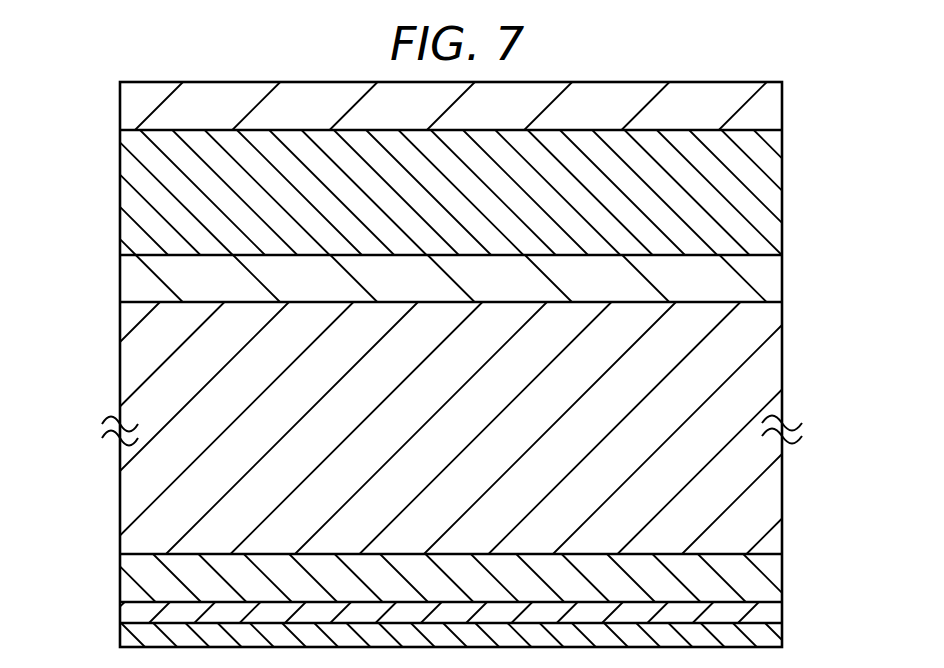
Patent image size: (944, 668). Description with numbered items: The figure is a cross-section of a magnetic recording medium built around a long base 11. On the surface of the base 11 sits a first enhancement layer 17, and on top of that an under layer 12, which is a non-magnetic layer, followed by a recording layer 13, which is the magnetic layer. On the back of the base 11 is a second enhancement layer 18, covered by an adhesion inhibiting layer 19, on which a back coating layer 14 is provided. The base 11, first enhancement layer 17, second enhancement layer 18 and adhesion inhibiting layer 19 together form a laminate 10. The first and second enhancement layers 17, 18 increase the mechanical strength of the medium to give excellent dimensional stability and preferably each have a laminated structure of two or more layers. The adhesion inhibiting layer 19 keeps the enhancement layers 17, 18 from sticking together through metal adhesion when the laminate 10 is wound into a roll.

The laminate 10 is at (79, 255).
The base 11 is at (773, 378).
The under layer 12 is at (772, 198).
The recording layer 13 is at (770, 112).
The back coating layer 14 is at (773, 635).
The first enhancement layer 17 is at (772, 278).
The second enhancement layer 18 is at (773, 573).
The adhesion inhibiting layer 19 is at (773, 615).